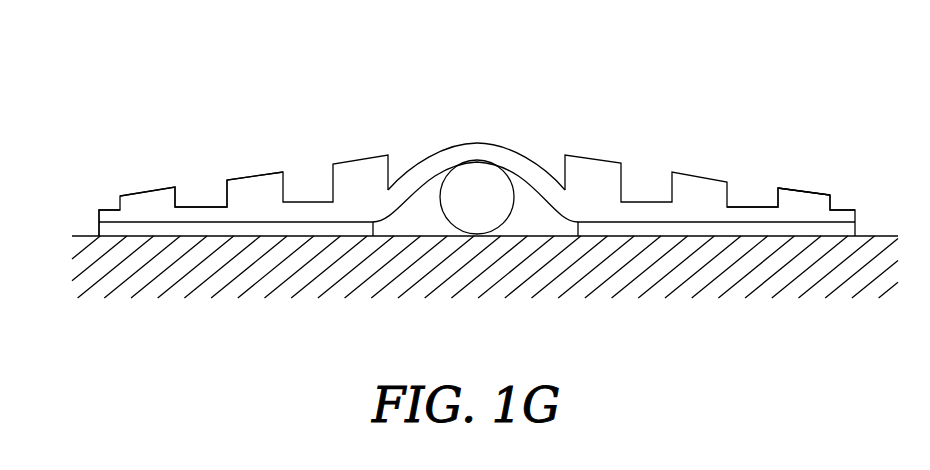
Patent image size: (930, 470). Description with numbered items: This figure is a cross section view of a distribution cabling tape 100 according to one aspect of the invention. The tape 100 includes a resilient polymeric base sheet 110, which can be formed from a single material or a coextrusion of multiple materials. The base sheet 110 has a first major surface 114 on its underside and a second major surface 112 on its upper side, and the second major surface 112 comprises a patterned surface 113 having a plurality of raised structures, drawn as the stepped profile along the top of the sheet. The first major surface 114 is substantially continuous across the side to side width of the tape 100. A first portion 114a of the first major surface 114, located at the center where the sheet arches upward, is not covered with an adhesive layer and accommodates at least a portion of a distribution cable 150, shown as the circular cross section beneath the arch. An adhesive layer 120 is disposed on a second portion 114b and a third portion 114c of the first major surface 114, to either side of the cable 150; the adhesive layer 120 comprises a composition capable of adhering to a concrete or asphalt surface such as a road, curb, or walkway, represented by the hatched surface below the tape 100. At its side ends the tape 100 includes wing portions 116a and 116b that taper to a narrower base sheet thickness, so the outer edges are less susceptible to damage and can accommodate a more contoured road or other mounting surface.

The distribution cabling tape 100 is at (764, 41).
The resilient polymeric base sheet 110 is at (797, 203).
The second major surface 112 is at (105, 205).
The patterned surface 113 is at (800, 188).
The first major surface 114 is at (505, 225).
The first portion 114a is at (476, 162).
The second portion 114b is at (345, 222).
The third portion 114c is at (810, 220).
The wing portion 116a is at (138, 144).
The wing portion 116b is at (835, 151).
The adhesive layer 120 is at (268, 228).
The distribution cable 150 is at (492, 213).